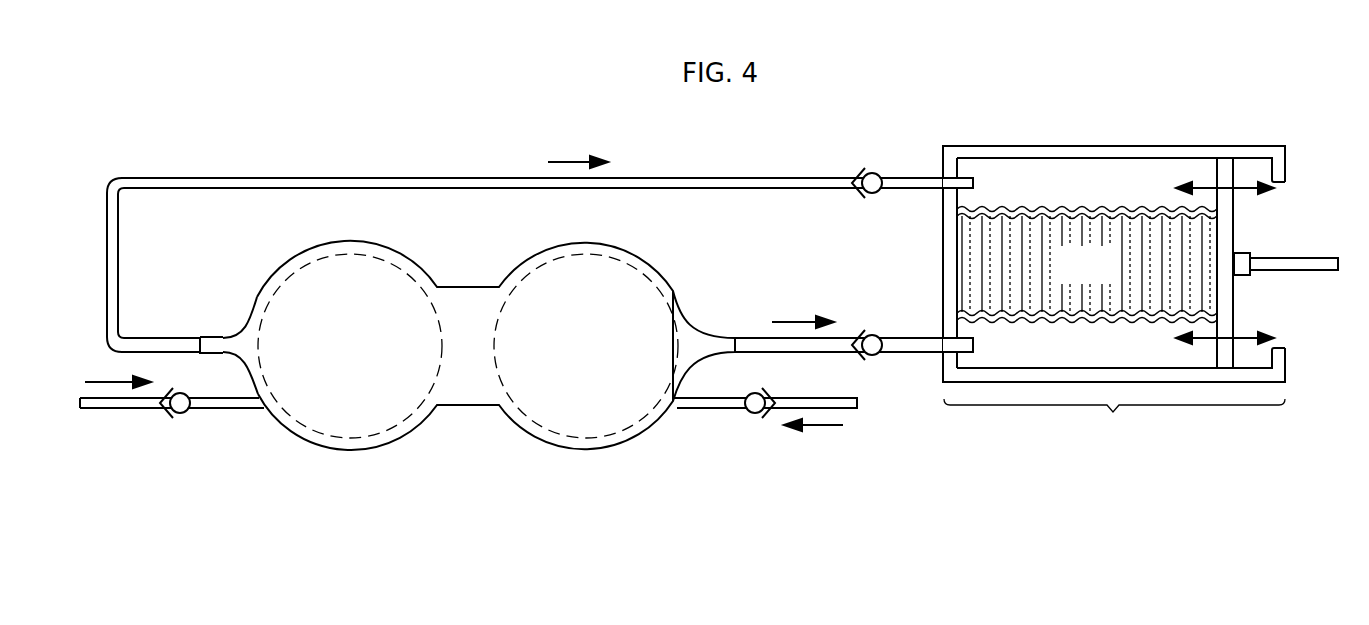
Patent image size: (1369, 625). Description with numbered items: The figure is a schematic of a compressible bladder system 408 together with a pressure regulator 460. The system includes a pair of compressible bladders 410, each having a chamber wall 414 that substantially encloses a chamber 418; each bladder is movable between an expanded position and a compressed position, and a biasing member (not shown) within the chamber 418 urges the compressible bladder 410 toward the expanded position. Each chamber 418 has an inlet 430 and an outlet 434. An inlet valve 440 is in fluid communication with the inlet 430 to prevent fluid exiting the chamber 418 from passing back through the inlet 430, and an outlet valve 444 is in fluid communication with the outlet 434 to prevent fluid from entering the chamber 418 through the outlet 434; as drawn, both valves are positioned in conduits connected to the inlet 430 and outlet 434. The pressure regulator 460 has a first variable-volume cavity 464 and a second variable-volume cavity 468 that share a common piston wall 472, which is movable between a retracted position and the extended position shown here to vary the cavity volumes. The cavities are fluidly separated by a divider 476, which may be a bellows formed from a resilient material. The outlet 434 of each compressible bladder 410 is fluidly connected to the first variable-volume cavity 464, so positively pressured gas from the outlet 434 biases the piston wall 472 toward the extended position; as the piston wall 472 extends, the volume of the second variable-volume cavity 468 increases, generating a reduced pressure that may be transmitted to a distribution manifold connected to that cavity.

The compressible bladder system 408 is at (1150, 107).
The compressible bladder 410 is at (372, 440).
The chamber wall 414 is at (368, 262).
The chamber 418 is at (329, 361).
The inlet 430 is at (262, 415).
The outlet 434 is at (200, 335).
The inlet valve 440 is at (181, 422).
The outlet valve 444 is at (873, 168).
The pressure regulator 460 is at (1114, 425).
The first variable-volume cavity 464 is at (1028, 178).
The second variable-volume cavity 468 is at (1067, 278).
The piston wall 472 is at (1236, 292).
The divider 476 is at (1104, 207).